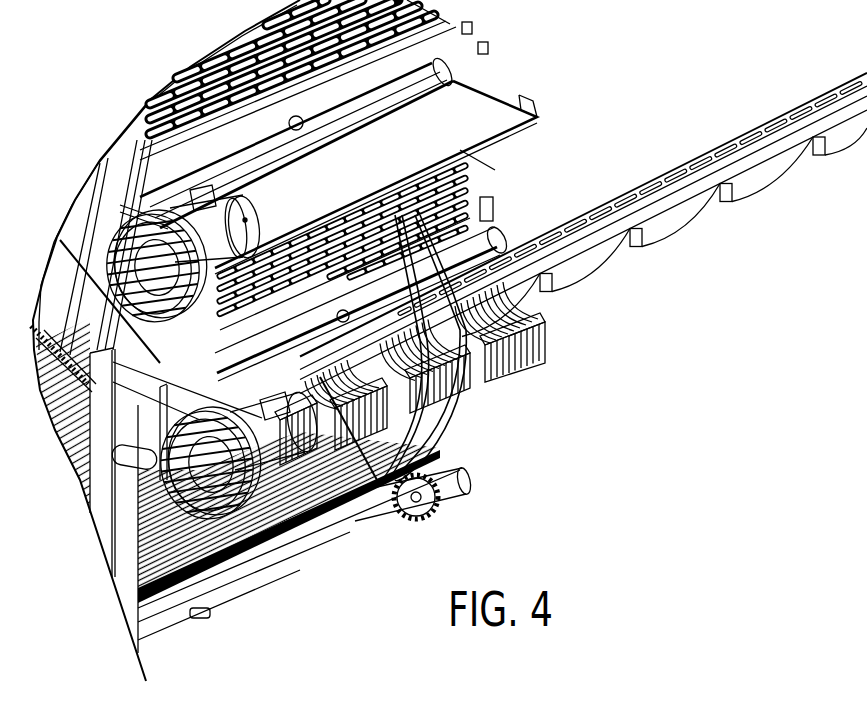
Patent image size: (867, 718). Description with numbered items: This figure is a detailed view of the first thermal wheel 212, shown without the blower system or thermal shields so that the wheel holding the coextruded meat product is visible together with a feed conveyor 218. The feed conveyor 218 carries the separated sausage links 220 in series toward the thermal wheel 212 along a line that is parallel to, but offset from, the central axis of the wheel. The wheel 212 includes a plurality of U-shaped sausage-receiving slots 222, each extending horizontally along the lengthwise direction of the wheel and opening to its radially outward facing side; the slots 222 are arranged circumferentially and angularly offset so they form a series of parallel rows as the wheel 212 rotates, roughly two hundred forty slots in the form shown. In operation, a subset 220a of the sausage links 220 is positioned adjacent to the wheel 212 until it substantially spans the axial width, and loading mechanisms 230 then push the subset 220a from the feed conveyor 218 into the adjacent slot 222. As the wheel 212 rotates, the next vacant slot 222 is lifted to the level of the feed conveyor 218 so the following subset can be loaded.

The first thermal wheel 212 is at (494, 60).
The feed conveyor 218 is at (710, 243).
The sausage links 220 is at (650, 185).
The subset of sausage links 220a is at (420, 215).
The U-shaped sausage-receiving slots 222 is at (468, 186).
The loading mechanisms 230 is at (530, 357).